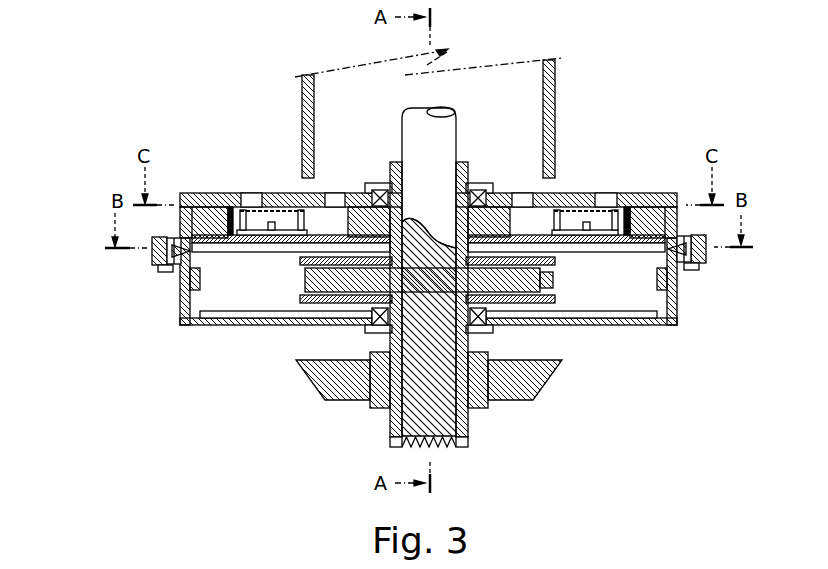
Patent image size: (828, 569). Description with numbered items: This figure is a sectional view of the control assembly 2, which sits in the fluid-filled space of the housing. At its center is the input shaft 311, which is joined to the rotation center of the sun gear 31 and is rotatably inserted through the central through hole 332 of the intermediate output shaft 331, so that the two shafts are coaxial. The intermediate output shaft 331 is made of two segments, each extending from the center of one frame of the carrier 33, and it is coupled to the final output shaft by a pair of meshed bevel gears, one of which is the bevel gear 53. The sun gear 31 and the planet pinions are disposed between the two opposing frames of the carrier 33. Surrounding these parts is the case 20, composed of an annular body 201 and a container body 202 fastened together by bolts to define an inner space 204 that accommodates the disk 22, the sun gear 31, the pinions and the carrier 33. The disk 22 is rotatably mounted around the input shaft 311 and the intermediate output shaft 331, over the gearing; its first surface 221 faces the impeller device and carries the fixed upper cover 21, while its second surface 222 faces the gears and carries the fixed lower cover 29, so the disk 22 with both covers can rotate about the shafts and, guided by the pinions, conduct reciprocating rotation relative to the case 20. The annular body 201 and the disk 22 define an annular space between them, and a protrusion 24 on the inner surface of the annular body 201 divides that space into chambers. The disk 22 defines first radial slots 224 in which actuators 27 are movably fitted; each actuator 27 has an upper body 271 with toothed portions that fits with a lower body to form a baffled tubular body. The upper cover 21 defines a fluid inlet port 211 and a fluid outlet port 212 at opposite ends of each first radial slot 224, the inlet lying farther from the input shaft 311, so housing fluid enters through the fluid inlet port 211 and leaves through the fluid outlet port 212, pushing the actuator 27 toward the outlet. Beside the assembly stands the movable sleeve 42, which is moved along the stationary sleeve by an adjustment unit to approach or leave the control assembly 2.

The control assembly 2 is at (173, 313).
The case 20 is at (222, 345).
The annular body 201 is at (187, 193).
The container body 202 is at (183, 288).
The inner space 204 is at (218, 300).
The upper cover 21 is at (207, 193).
The fluid inlet port 211 is at (247, 193).
The fluid outlet port 212 is at (328, 193).
The disk 22 is at (518, 210).
The first surface 221 is at (498, 207).
The second surface 222 is at (545, 382).
The first radial slot 224 is at (340, 223).
The protrusion 24 is at (645, 230).
The actuator 27 is at (673, 312).
The upper body 271 is at (658, 323).
The lower cover 29 is at (612, 210).
The sun gear 31 is at (566, 244).
The input shaft 311 is at (445, 138).
The carrier 33 is at (300, 299).
The intermediate output shaft 331 is at (467, 418).
The central through hole 332 is at (388, 415).
The movable sleeve 42 is at (555, 68).
The bevel gear 53 is at (333, 378).